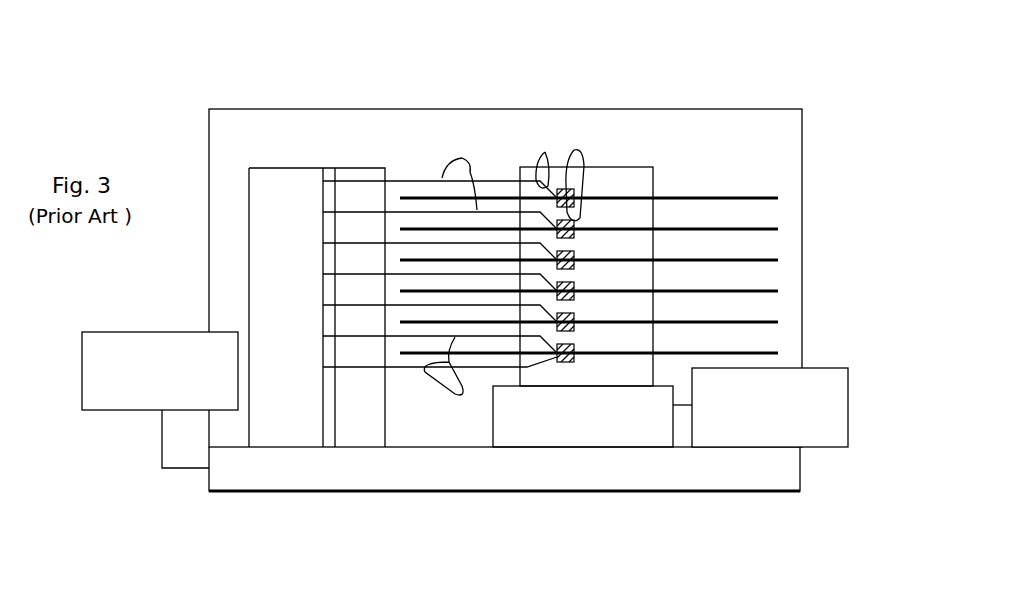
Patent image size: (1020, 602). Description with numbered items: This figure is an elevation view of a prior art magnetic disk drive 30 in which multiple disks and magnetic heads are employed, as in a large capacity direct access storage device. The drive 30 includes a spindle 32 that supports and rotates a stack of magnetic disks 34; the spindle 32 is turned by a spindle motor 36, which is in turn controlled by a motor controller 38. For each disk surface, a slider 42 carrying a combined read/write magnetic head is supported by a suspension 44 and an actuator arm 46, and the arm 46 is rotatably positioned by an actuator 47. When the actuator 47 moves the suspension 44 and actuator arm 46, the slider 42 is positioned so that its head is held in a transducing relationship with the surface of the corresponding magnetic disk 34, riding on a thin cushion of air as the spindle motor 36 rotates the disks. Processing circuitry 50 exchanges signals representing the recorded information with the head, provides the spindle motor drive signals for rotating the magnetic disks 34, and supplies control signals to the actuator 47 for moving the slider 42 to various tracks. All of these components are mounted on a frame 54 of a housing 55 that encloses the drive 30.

The magnetic disk drive 30 is at (700, 165).
The spindle 32 is at (634, 167).
The magnetic disk 34 is at (757, 198).
The spindle motor 36 is at (592, 416).
The motor controller 38 is at (838, 449).
The slider 42 is at (580, 174).
The suspension 44 is at (543, 158).
The actuator arm 46 is at (450, 282).
The actuator 47 is at (295, 168).
The processing circuitry 50 is at (142, 332).
The frame 54 is at (312, 492).
The housing 55 is at (662, 109).